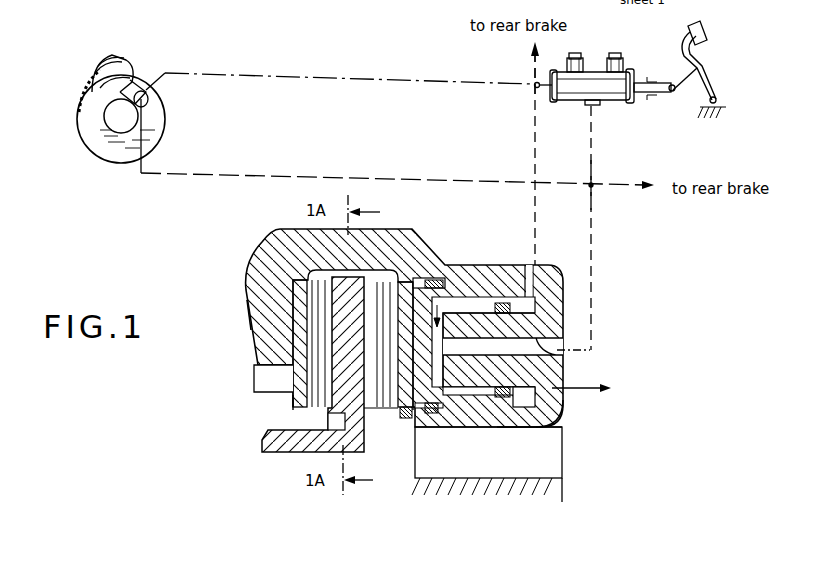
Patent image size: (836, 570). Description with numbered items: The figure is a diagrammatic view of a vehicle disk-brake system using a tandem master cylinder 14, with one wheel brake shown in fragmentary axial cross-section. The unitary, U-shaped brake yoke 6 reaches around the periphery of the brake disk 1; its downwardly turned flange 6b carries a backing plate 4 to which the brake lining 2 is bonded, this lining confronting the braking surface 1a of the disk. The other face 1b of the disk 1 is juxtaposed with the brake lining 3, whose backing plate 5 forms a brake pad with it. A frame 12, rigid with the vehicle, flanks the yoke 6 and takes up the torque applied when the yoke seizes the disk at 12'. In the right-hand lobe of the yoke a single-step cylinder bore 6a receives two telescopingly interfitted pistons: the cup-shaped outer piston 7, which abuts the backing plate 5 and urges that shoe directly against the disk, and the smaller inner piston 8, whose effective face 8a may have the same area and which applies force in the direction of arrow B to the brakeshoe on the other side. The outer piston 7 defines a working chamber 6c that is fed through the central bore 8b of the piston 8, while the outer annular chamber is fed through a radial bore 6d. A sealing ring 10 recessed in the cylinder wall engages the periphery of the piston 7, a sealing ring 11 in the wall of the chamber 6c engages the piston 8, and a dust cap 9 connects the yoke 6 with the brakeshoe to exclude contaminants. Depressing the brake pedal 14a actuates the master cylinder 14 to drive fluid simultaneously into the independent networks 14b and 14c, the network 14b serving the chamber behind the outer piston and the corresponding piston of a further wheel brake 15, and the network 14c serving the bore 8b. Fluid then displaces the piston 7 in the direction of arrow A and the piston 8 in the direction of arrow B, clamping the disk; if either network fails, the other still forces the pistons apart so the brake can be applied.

The brake disk 1 is at (338, 393).
The braking surface 1a is at (284, 229).
The other face of disk 1b is at (380, 297).
The brake lining 2 is at (306, 336).
The brake lining 3 is at (437, 278).
The backing plate 4 is at (293, 400).
The backing plate 5 is at (368, 410).
The brake yoke 6 is at (262, 262).
The cylinder bore 6a is at (530, 405).
The flange 6b is at (255, 297).
The working chamber 6c is at (436, 325).
The radial bore 6d is at (532, 277).
The outer piston 7 is at (497, 432).
The inner piston 8 is at (470, 322).
The effective face of inner piston 8a is at (484, 402).
The central bore 8b is at (563, 368).
The dust cap 9 is at (404, 422).
The sealing ring 10 is at (420, 300).
The sealing ring 11 is at (507, 392).
The frame 12 is at (244, 378).
The torque take-up location 12' is at (509, 464).
The tandem master cylinder 14 is at (615, 90).
The brake pedal 14a is at (703, 56).
The fluid-transmission network 14b is at (527, 85).
The fluid-transmission network 14c is at (594, 187).
The wheel brake 15 is at (84, 77).
The arrow A is at (413, 420).
The arrow B is at (580, 393).